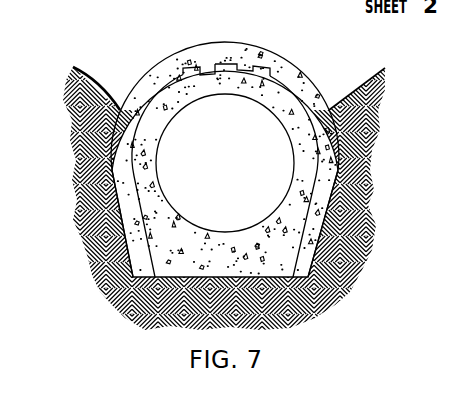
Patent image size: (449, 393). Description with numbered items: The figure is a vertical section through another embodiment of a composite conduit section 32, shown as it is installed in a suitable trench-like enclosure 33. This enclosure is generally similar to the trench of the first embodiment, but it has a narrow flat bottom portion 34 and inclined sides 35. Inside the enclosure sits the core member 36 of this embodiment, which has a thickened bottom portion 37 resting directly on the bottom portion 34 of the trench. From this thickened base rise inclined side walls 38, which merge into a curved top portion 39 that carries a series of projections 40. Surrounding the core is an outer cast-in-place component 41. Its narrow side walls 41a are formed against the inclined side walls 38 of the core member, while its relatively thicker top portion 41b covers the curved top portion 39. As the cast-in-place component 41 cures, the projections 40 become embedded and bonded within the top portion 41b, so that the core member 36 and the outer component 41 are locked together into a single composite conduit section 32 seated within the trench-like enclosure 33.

The composite conduit section 32 is at (240, 38).
The trench-like enclosure 33 is at (82, 158).
The bottom portion 34 is at (132, 311).
The inclined sides 35 is at (334, 212).
The core member 36 is at (152, 176).
The thickened bottom portion 37 is at (291, 304).
The inclined side walls 38 is at (137, 205).
The curved top portion 39 is at (208, 66).
The projections 40 is at (264, 67).
The outer cast-in-place component 41 is at (306, 75).
The narrow side walls 41a is at (339, 157).
The top portion 41b is at (174, 54).